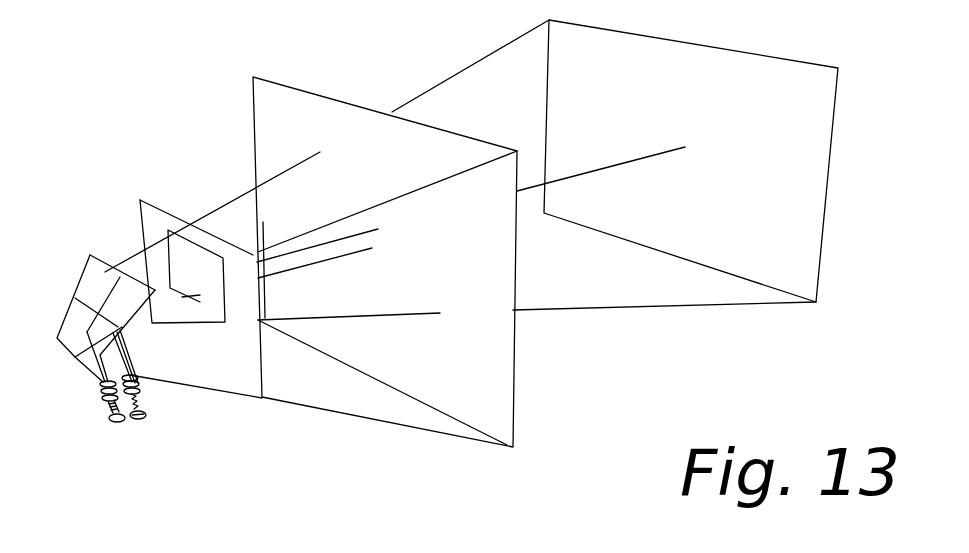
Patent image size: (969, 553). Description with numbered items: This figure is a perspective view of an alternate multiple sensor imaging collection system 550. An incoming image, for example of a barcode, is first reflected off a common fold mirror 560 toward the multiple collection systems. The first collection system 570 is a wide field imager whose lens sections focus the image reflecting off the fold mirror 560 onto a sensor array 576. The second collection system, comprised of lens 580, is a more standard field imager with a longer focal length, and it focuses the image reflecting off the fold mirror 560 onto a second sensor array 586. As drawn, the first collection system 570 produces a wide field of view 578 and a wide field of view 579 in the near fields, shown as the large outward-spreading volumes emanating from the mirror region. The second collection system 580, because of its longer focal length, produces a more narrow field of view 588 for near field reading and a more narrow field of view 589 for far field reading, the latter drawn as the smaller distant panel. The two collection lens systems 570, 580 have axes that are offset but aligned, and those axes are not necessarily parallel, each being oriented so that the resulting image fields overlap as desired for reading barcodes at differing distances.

The multiple sensor imaging collection system 550 is at (108, 222).
The common fold mirror 560 is at (90, 290).
The first collection system 570 is at (107, 387).
The sensor array 576 is at (120, 422).
The wide field of view 578 is at (242, 358).
The wide field of view 579 is at (485, 383).
The second collection system lens 580 is at (140, 390).
The sensor array 586 is at (147, 413).
The narrow field of view 588 is at (185, 260).
The narrow field of view 589 is at (788, 205).